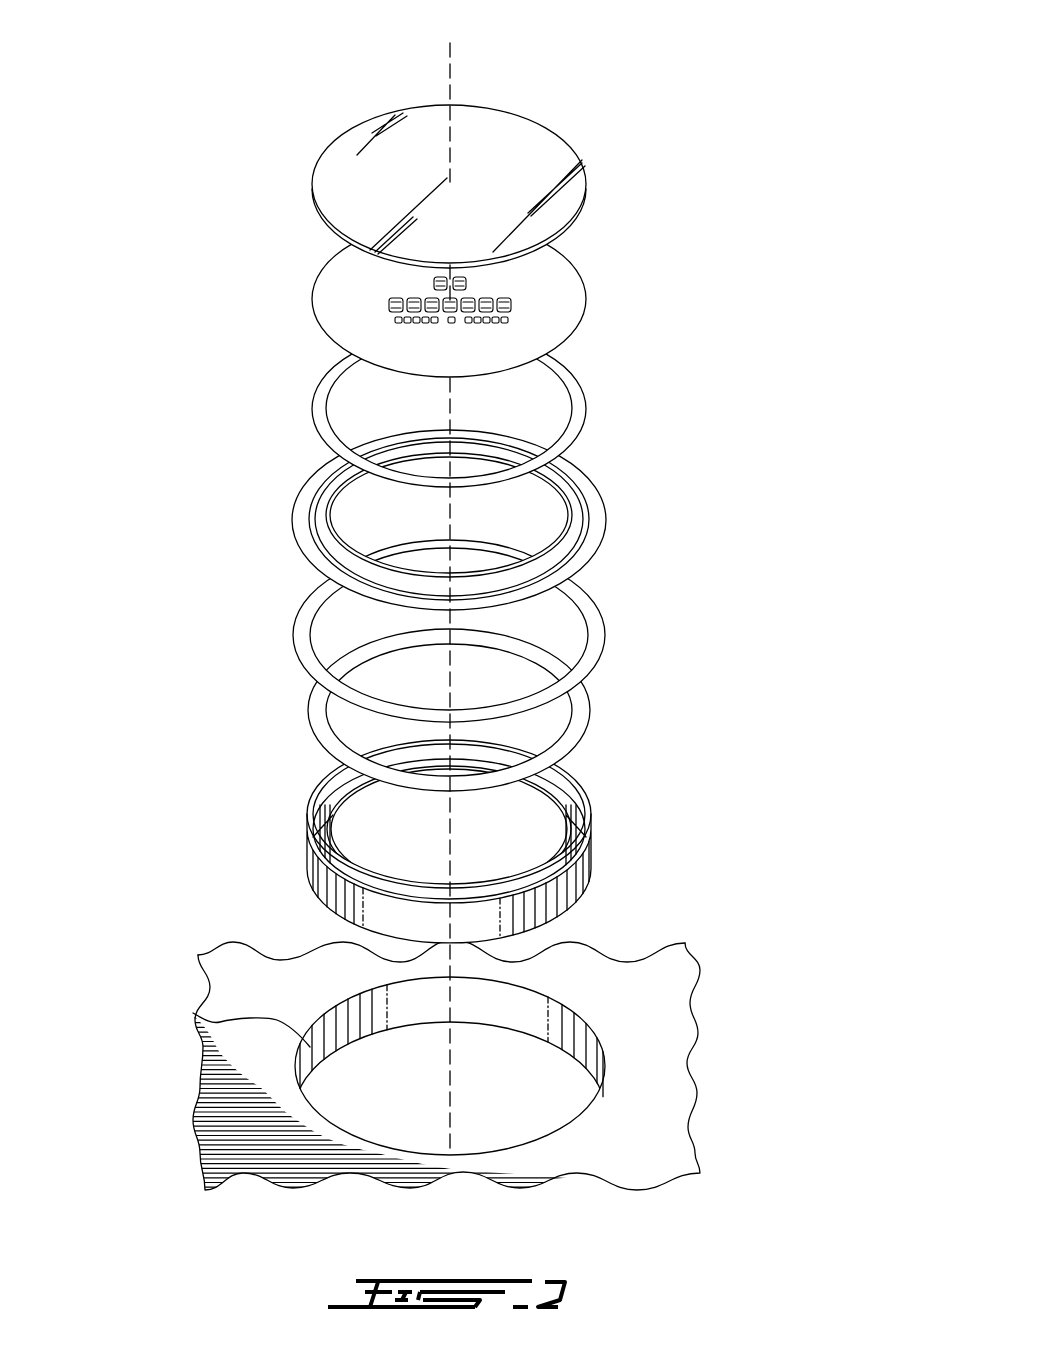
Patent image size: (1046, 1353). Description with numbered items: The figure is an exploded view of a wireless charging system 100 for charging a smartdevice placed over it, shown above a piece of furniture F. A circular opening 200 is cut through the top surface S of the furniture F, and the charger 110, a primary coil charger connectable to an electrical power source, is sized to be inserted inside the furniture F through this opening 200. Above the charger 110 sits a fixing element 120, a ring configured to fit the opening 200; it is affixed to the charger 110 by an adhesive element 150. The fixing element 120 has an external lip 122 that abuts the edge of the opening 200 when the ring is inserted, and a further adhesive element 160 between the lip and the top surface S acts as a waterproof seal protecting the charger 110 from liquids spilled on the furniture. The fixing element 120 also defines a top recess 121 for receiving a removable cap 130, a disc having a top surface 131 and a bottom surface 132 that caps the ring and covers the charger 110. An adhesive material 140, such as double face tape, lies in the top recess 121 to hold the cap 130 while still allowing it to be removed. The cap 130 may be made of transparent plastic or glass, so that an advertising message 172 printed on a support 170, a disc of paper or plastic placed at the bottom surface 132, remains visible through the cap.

The charging system 100 is at (506, 474).
The charger 110 is at (590, 837).
The fixing element 120 is at (476, 547).
The top recess 121 is at (321, 515).
The external lip 122 is at (298, 557).
The removable cap 130 is at (469, 171).
The top surface 131 is at (517, 147).
The bottom surface 132 is at (318, 213).
The adhesive material 140 is at (587, 413).
The adhesive element 150 is at (590, 710).
The adhesive element 160 is at (605, 632).
The support 170 is at (469, 299).
The advertising message 172 is at (393, 298).
The opening 200 is at (193, 1013).
The furniture F is at (712, 944).
The top surface S is at (638, 1057).